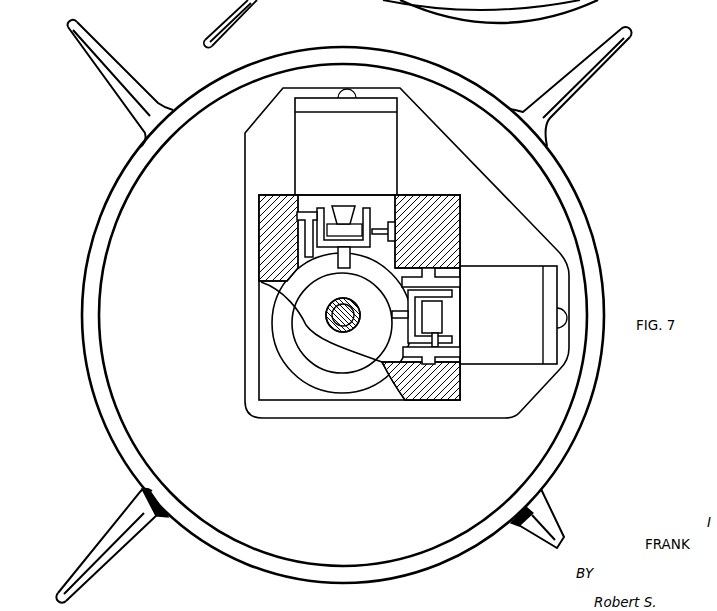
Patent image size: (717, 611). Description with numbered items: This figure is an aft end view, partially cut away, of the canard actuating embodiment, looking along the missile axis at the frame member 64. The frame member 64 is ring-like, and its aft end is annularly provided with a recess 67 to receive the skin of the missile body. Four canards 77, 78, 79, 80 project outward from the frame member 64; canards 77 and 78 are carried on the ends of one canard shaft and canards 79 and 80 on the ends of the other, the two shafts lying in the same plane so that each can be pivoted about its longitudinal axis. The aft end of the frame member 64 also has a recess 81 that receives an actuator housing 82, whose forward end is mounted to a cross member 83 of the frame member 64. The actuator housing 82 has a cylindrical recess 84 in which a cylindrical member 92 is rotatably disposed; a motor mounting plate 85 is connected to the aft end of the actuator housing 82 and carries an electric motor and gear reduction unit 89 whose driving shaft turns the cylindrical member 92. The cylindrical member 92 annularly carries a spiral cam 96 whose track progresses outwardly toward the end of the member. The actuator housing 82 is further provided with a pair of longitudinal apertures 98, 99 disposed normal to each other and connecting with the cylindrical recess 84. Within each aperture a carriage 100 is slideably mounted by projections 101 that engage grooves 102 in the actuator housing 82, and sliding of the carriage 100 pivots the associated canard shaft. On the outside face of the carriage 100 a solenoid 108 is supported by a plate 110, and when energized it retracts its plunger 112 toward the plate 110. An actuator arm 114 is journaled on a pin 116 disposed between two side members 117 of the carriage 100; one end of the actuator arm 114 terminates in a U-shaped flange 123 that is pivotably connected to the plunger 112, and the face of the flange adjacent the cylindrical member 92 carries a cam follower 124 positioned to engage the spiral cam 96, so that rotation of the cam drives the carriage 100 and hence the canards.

The frame member 64 is at (251, 472).
The recess 67 is at (117, 427).
The canard 77 is at (547, 508).
The canard 78 is at (97, 46).
The canard 79 is at (133, 542).
The canard 80 is at (587, 88).
The recess 81 is at (493, 408).
The actuator housing 82 is at (383, 222).
The cross member 83 is at (516, 242).
The cylindrical recess 84 is at (405, 398).
The motor mounting plate 85 is at (359, 298).
The electric motor and gear reduction unit 89 is at (342, 323).
The cylindrical member 92 is at (352, 298).
The spiral cam 96 is at (312, 296).
The longitudinal aperture 98 is at (403, 195).
The longitudinal aperture 99 is at (452, 367).
The carriage 100 is at (370, 200).
The projection 101 is at (309, 250).
The groove 102 is at (304, 236).
The solenoid 108 is at (346, 146).
The plate 110 is at (346, 101).
The plunger 112 is at (348, 195).
The actuator arm 114 is at (320, 195).
The pin 116 is at (396, 233).
The side member 117 is at (320, 226).
The U-shaped flange 123 is at (327, 242).
The cam follower 124 is at (290, 282).